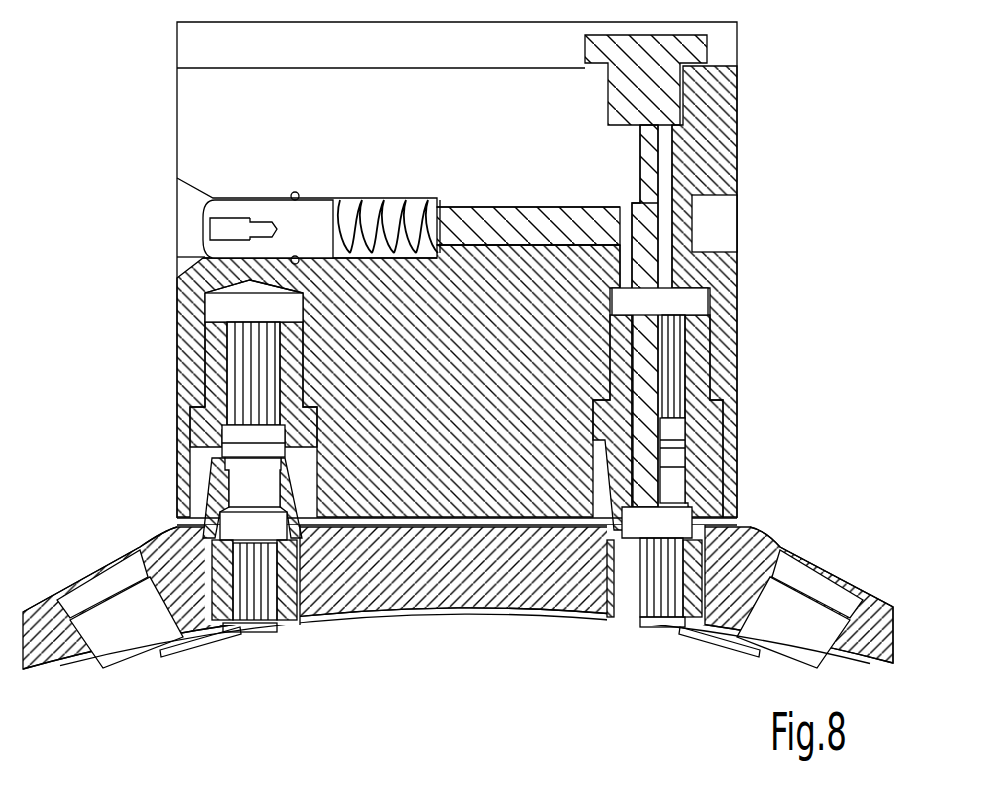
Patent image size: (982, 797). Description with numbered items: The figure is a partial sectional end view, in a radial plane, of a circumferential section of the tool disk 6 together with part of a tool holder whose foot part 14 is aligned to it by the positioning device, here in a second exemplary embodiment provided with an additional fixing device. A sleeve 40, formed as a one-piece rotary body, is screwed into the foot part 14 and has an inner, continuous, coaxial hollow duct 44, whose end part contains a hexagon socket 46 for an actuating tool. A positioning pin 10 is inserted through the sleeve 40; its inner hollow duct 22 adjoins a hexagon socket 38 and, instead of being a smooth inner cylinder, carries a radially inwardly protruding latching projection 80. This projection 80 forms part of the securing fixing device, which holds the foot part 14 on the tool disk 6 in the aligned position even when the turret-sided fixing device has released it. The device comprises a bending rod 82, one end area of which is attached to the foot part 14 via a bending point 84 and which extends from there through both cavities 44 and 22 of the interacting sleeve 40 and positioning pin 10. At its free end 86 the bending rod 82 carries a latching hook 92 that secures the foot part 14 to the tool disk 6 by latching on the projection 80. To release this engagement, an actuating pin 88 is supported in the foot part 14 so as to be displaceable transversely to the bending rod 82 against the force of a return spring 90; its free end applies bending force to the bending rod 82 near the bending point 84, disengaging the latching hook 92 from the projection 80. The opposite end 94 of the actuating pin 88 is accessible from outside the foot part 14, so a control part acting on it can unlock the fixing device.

The tool disk 6 is at (885, 600).
The positioning pin 10 is at (203, 490).
The foot part 14 is at (712, 292).
The inner hollow duct 22 is at (248, 537).
The hexagon socket 38 is at (225, 623).
The sleeve 40 is at (202, 398).
The hollow duct 44 is at (677, 432).
The hexagon socket 46 is at (243, 370).
The latching projection 80 is at (287, 587).
The bending rod 82 is at (637, 255).
The bending point 84 is at (640, 183).
The free end 86 is at (687, 600).
The actuating pin 88 is at (510, 232).
The return spring 90 is at (374, 208).
The latching hook 92 is at (617, 528).
The end of actuating pin 94 is at (205, 210).